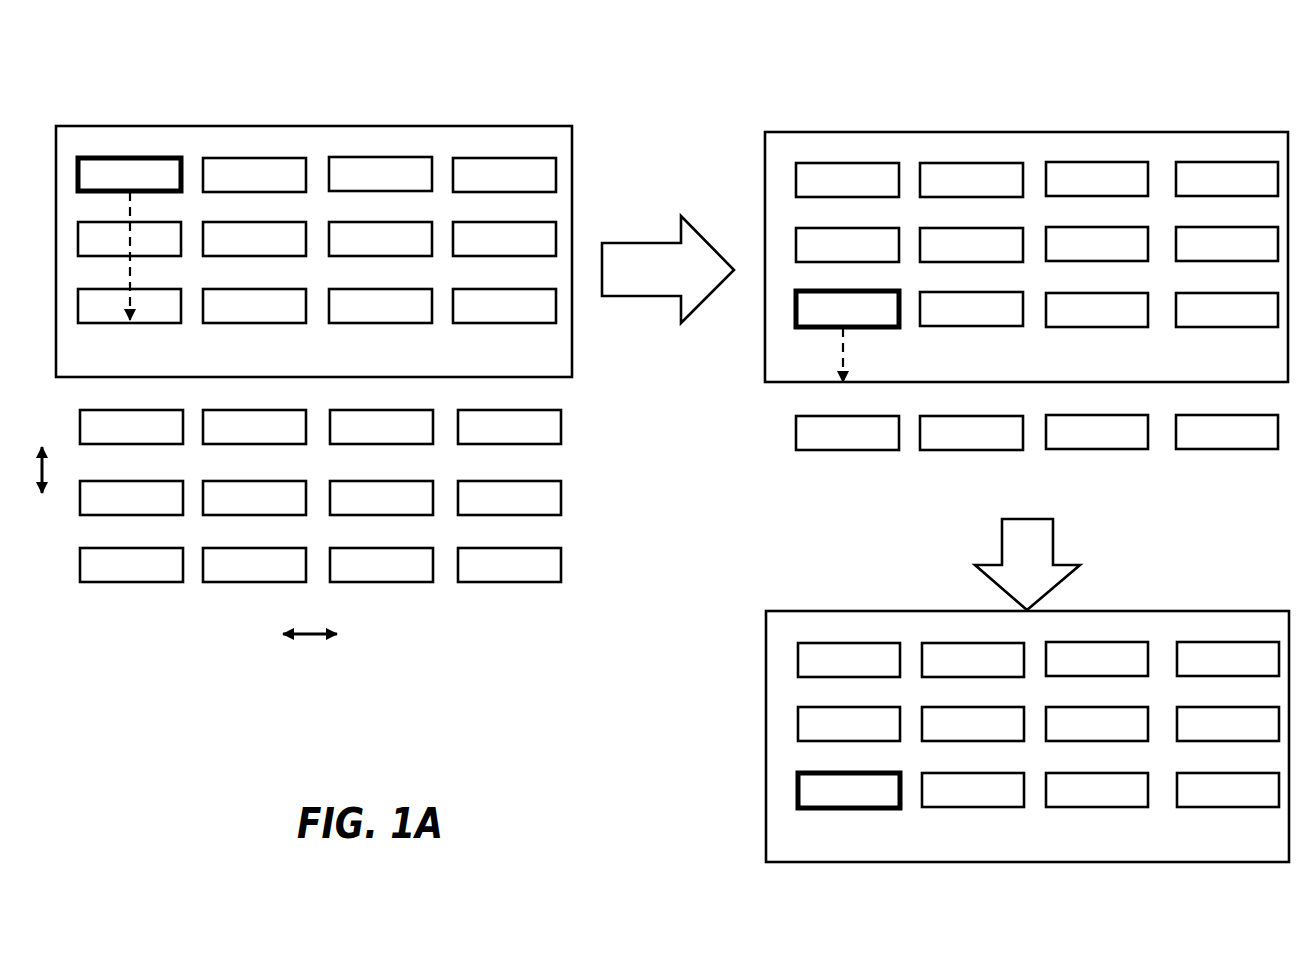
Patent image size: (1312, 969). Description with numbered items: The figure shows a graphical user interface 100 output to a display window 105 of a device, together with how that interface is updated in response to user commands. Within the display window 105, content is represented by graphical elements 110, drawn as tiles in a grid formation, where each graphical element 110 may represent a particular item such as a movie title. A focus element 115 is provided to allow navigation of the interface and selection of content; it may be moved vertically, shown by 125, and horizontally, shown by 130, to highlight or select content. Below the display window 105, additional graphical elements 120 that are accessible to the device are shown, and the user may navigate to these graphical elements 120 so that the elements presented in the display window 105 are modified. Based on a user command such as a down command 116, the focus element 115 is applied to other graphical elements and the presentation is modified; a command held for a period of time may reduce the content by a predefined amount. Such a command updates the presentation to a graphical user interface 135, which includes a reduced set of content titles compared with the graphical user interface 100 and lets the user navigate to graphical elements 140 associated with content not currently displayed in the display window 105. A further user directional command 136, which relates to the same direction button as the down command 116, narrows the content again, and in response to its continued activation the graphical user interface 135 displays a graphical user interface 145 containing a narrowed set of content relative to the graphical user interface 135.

The graphical user interface 100 is at (672, 442).
The display window 105 is at (387, 125).
The graphical elements 110 is at (139, 168).
The focus element 115 is at (167, 158).
The down command 116 is at (133, 285).
The additional graphical elements 120 is at (590, 450).
The vertical direction 125 is at (67, 470).
The horizontal direction 130 is at (312, 620).
The graphical user interface 135 is at (992, 230).
The user directional command 136 is at (846, 374).
The graphical elements 140 is at (785, 437).
The graphical user interface 145 is at (818, 602).